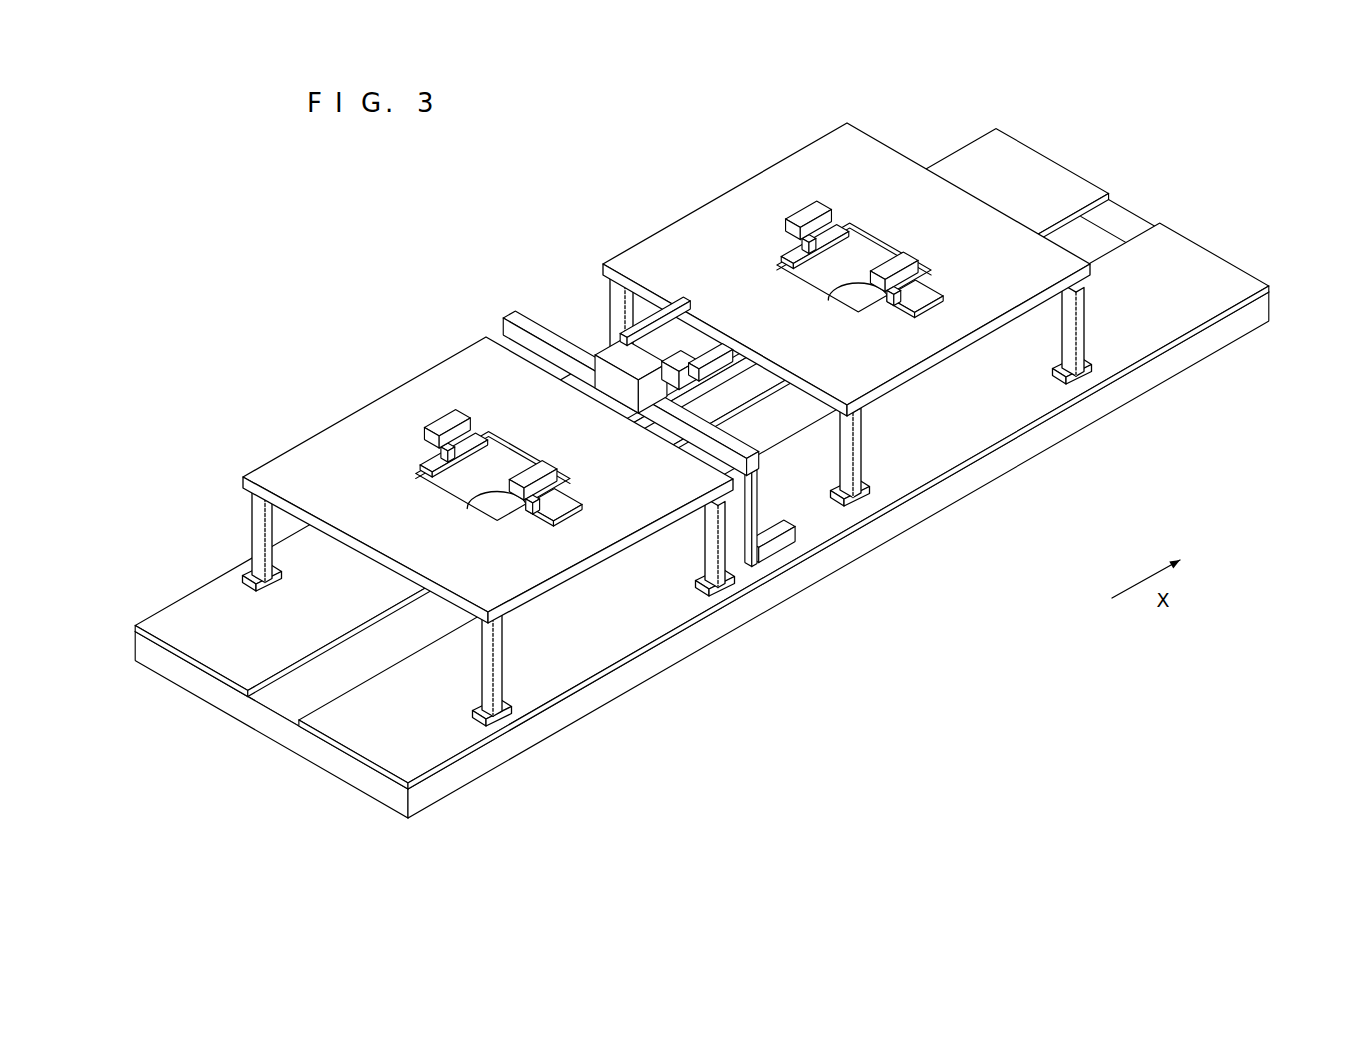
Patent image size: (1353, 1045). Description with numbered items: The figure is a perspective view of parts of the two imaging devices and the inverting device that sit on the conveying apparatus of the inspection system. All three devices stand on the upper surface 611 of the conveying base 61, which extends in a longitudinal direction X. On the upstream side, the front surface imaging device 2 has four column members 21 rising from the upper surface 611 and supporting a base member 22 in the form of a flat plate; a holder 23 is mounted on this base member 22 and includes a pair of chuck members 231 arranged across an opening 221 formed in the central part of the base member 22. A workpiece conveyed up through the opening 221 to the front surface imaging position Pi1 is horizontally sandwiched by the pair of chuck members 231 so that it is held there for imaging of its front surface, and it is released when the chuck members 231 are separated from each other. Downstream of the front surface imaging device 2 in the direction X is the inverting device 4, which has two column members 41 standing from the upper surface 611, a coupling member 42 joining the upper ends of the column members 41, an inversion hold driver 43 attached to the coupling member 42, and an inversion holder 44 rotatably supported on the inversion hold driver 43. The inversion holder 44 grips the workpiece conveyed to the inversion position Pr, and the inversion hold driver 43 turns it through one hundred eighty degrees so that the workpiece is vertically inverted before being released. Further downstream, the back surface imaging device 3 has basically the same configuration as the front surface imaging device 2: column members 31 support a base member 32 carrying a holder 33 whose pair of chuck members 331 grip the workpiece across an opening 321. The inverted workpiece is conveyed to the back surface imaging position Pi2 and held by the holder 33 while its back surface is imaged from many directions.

The front surface imaging device 2 is at (247, 381).
The column members 21 is at (258, 526).
The base member 22 is at (281, 467).
The holder 23 is at (553, 515).
The chuck members 231 is at (454, 426).
The opening 221 is at (557, 530).
The back surface imaging device 3 is at (827, 102).
The column members 31 is at (1080, 340).
The base member 32 is at (637, 253).
The holder 33 is at (907, 287).
The chuck members 331 is at (817, 213).
The opening 321 is at (888, 300).
The inverting device 4 is at (506, 247).
The column members 41 is at (758, 545).
The coupling member 42 is at (522, 323).
The inversion hold driver 43 is at (597, 330).
The inversion holder 44 is at (805, 528).
The conveying base 61 is at (1208, 343).
The upper surface 611 is at (1227, 300).
The inversion position Pr is at (703, 330).
The front surface imaging position Pi1 is at (496, 461).
The back surface imaging position Pi2 is at (863, 247).